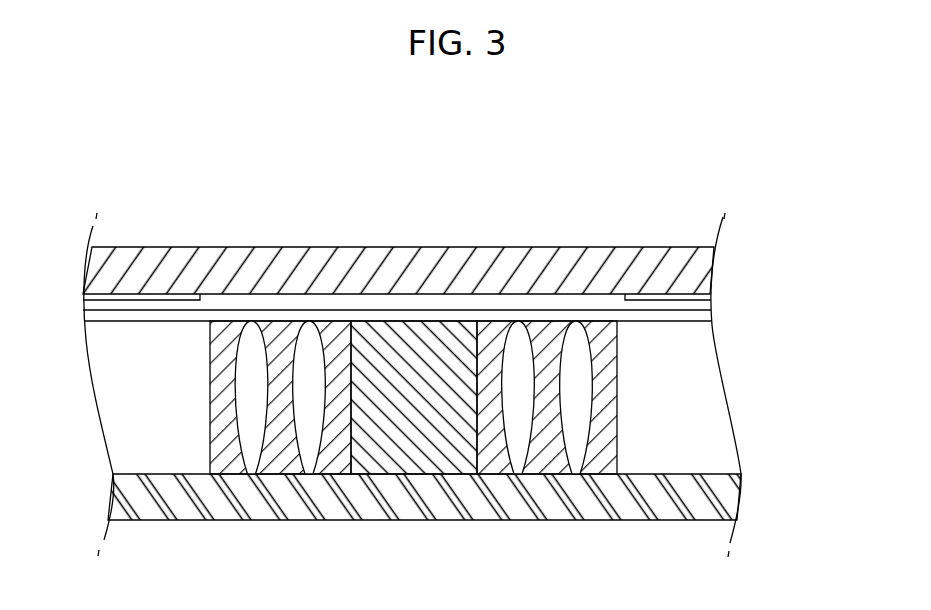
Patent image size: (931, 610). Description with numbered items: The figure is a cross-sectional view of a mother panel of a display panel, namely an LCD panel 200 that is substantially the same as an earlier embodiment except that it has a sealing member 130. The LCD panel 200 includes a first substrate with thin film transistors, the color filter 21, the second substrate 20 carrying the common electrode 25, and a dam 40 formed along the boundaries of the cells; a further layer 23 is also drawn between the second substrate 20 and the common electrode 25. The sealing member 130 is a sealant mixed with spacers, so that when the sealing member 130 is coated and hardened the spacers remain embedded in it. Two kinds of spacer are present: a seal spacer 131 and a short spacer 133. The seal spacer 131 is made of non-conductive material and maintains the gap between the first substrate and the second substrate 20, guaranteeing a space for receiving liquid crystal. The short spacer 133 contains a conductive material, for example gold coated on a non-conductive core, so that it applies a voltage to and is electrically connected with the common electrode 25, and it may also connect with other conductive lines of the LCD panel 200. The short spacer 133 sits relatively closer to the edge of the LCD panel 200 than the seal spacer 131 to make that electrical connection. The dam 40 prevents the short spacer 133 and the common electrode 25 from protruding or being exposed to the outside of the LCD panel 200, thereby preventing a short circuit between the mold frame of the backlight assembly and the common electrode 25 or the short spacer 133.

The LCD panel 200 is at (431, 184).
The second substrate 20 is at (697, 266).
The color filter 21 is at (708, 297).
The common electrode 23 is at (707, 305).
The common electrode 25 is at (708, 318).
The sealing member 130 is at (402, 448).
The seal spacer 131 is at (253, 453).
The short spacer 133 is at (310, 455).
The dam 40 is at (415, 453).